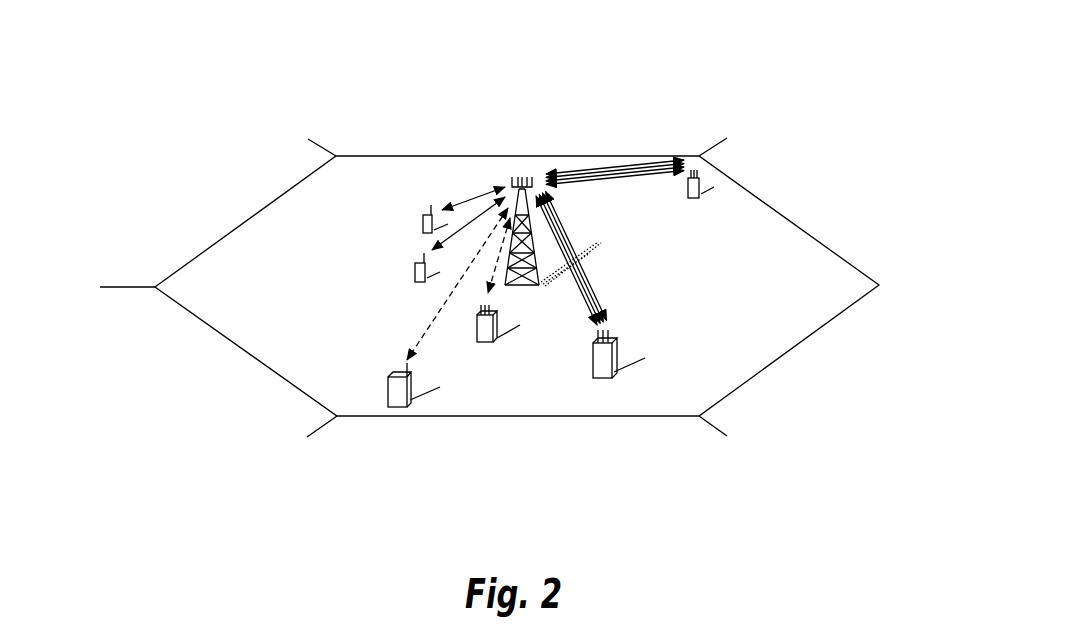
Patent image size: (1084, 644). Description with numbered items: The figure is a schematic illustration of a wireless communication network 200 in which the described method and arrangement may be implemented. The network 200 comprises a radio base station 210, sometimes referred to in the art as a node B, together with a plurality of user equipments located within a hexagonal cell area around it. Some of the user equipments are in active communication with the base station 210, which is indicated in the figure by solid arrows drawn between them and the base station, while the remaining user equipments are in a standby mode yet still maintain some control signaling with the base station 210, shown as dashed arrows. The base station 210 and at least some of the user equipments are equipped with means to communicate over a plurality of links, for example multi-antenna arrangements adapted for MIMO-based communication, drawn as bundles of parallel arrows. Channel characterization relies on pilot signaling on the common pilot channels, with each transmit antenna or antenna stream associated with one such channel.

The wireless communication network 200 is at (278, 105).
The radio base station 210 is at (517, 172).